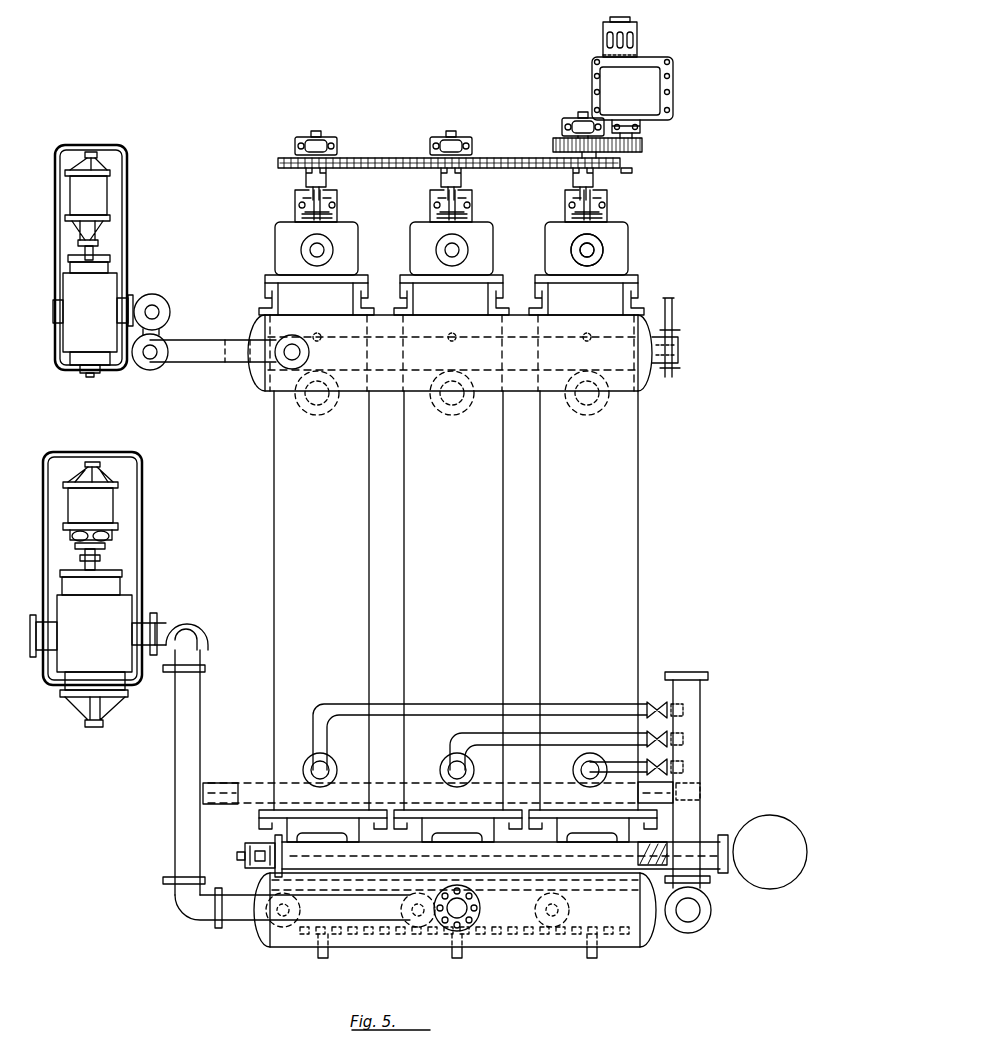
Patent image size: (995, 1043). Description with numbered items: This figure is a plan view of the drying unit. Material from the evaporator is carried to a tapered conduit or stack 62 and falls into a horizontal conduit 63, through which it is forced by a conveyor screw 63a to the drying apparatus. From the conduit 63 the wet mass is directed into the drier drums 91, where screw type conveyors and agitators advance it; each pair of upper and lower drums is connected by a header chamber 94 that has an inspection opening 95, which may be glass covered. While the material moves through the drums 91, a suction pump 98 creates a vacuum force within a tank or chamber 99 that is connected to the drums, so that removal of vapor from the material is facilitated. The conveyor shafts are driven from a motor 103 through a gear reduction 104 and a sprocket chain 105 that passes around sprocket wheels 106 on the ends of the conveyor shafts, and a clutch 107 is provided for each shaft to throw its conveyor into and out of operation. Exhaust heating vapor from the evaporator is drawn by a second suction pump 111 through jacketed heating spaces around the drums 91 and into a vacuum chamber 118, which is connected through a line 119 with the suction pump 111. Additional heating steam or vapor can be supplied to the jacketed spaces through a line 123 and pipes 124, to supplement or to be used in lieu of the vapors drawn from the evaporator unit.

The conduit or stack 62 is at (775, 830).
The horizontal conduit 63 is at (712, 840).
The conveyor screw 63a is at (657, 832).
The drier drums 91 is at (412, 474).
The header chamber 94 is at (275, 243).
The inspection opening 95 is at (598, 241).
The suction pump 98 is at (120, 606).
The tank or chamber 99 is at (286, 940).
The motor 103 is at (653, 87).
The gear reduction 104 is at (612, 153).
The sprocket chain 105 is at (515, 157).
The sprocket wheels 106 is at (333, 157).
The clutch 107 is at (462, 178).
The suction pump 111 is at (72, 287).
The vacuum chamber 118 is at (648, 384).
The line 119 is at (197, 358).
The line 123 is at (694, 697).
The pipes 124 is at (614, 767).